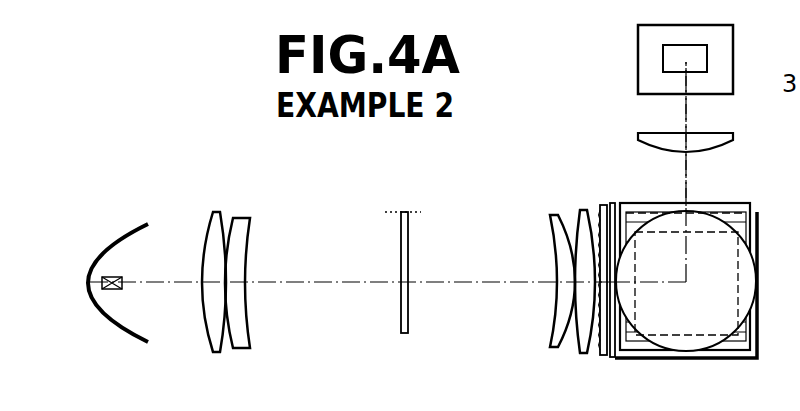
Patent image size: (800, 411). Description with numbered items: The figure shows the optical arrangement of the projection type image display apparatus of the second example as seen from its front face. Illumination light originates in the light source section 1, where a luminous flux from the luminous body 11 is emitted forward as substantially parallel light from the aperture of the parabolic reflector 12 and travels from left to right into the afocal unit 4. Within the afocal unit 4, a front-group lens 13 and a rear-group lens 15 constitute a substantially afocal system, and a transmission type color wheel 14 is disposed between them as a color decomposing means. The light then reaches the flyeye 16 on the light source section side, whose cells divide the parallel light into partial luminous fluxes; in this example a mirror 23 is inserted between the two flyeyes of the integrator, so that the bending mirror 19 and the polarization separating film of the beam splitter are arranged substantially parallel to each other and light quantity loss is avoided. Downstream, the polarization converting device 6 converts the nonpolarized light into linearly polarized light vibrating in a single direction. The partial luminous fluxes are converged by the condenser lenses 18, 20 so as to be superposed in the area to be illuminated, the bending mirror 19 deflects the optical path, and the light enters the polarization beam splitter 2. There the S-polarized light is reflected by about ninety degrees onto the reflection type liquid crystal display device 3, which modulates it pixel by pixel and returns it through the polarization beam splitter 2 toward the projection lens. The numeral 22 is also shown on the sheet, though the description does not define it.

The light source section 1 is at (120, 226).
The polarization beam splitter 2 is at (645, 73).
The reflection type liquid crystal display device 3 is at (663, 58).
The afocal unit 4 is at (205, 190).
The polarization converting device 6 is at (750, 203).
The luminous body 11 is at (122, 287).
The parabolic reflector 12 is at (150, 230).
The front-group lens 13 is at (202, 352).
The transmission type color wheel 14 is at (401, 322).
The rear-group lens 15 is at (545, 352).
The flyeye 16 is at (609, 360).
The condenser lens 18 is at (692, 340).
The bending mirror 19 is at (752, 281).
The condenser lens 20 is at (638, 140).
The reference numeral 22 is at (786, 44).
The mirror 23 is at (740, 358).